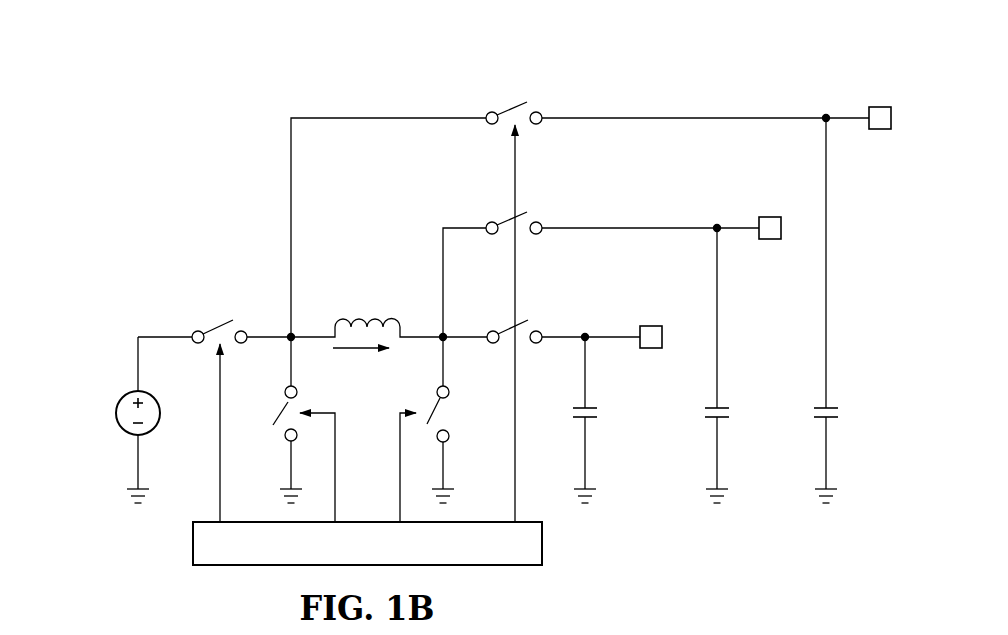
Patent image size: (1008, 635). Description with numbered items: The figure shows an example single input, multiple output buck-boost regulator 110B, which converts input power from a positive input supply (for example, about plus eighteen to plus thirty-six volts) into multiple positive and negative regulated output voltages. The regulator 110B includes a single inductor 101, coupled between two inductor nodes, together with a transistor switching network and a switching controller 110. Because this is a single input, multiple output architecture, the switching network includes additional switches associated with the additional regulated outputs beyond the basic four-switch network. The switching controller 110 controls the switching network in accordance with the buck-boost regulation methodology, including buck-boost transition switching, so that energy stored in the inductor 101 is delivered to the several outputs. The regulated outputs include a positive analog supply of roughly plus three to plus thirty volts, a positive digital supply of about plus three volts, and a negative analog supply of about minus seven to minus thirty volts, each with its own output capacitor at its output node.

The SIMO buck-boost regulator 110B is at (221, 83).
The inductor 101 is at (343, 318).
The switching controller 110 is at (193, 542).